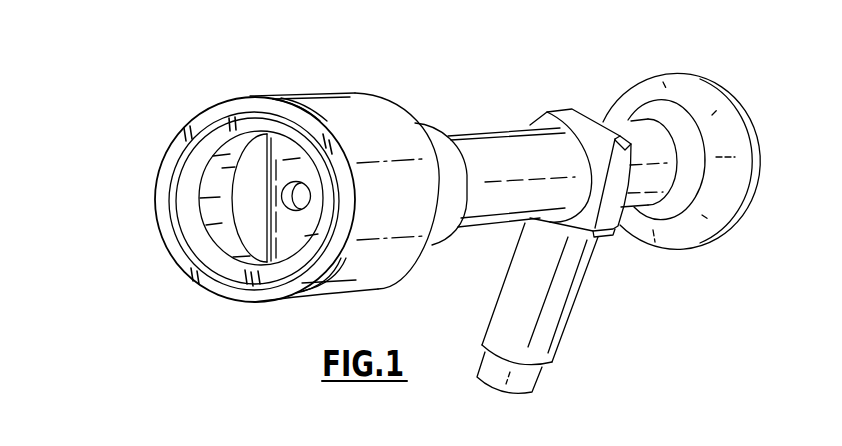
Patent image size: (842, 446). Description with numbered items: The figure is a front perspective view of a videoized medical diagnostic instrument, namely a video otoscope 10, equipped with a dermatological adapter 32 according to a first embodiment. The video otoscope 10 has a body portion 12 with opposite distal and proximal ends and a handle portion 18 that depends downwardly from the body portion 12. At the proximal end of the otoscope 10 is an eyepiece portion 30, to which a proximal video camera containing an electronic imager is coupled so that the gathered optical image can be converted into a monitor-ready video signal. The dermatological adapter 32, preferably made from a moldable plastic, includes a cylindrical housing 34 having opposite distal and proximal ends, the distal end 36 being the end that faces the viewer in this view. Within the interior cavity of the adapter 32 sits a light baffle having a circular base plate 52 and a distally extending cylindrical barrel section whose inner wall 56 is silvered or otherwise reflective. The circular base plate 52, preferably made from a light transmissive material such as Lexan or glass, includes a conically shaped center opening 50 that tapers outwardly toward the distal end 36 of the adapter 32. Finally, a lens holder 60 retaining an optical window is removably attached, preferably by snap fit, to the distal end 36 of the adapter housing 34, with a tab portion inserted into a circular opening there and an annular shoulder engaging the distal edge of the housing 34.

The video otoscope 10 is at (538, 78).
The body portion 12 is at (500, 127).
The handle portion 18 is at (557, 307).
The eyepiece portion 30 is at (725, 93).
The dermatological adapter 32 is at (324, 86).
The cylindrical housing 34 is at (352, 105).
The distal end of adapter housing 36 is at (226, 277).
The center opening 50 is at (294, 211).
The circular base plate 52 is at (243, 212).
The reflective inner wall 56 is at (208, 175).
The lens holder 60 is at (200, 113).